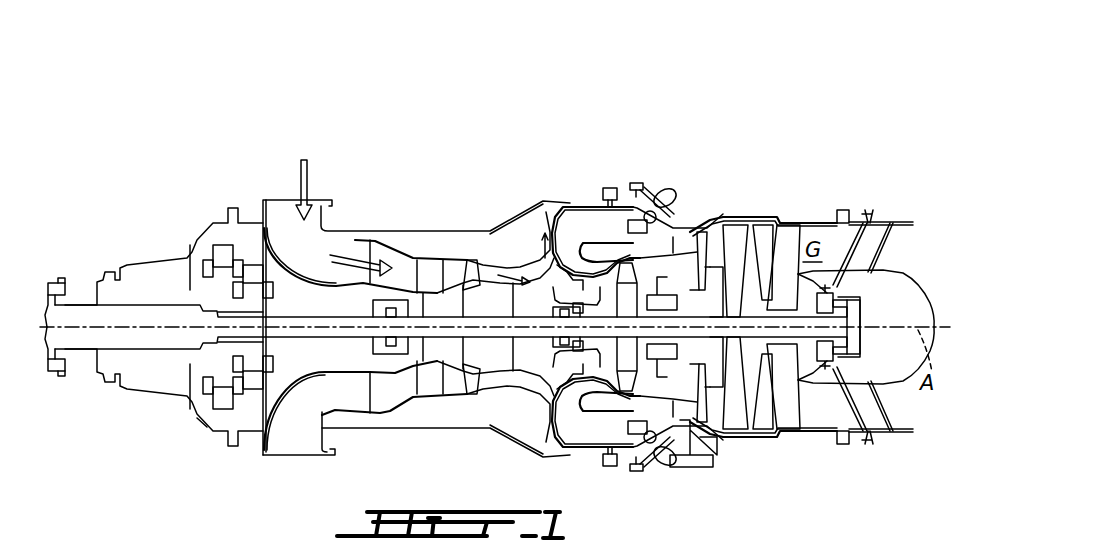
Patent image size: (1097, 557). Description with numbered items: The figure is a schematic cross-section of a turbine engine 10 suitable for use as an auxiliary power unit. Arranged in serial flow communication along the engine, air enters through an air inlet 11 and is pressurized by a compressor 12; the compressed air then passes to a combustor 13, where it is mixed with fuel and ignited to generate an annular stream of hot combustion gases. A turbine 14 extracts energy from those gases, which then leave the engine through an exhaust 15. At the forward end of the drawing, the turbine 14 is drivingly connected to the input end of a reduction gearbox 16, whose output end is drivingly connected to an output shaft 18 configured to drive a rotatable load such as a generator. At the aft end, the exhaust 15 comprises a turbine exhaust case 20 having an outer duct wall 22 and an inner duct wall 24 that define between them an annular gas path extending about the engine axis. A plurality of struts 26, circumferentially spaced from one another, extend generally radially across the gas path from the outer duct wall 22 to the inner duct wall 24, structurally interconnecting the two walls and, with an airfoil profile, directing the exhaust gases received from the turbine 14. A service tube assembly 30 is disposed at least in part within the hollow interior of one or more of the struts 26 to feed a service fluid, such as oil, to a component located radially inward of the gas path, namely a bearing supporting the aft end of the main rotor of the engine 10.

The turbine engine 10 is at (727, 103).
The air inlet 11 is at (275, 207).
The compressor 12 is at (448, 417).
The combustor 13 is at (588, 226).
The turbine 14 is at (752, 197).
The exhaust 15 is at (878, 160).
The reduction gearbox 16 is at (201, 424).
The output shaft 18 is at (74, 305).
The turbine exhaust case 20 is at (893, 213).
The outer duct wall 22 is at (910, 225).
The inner duct wall 24 is at (880, 270).
The struts 26 is at (880, 250).
The service tube assembly 30 is at (863, 293).